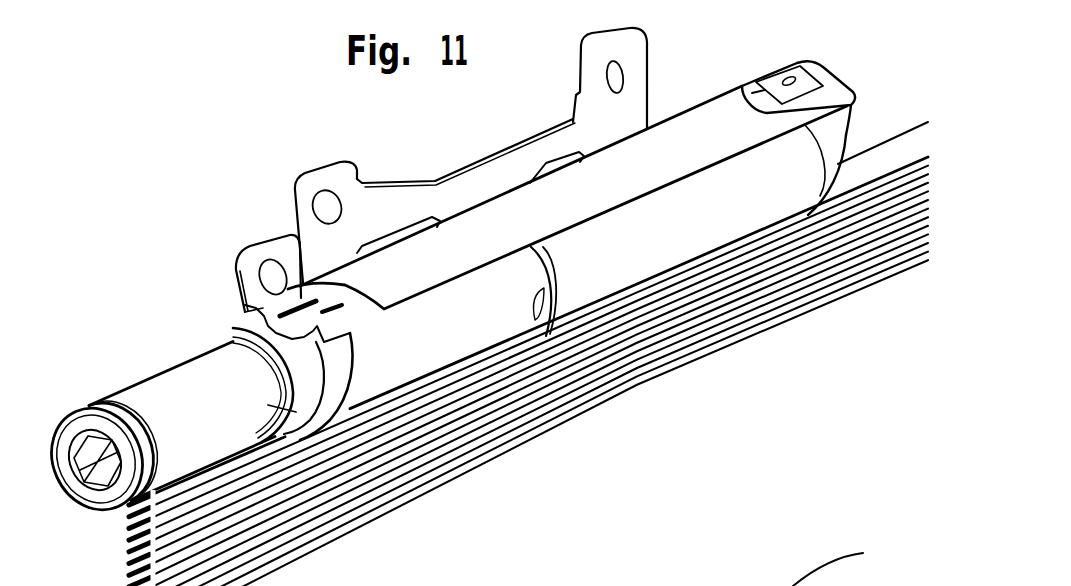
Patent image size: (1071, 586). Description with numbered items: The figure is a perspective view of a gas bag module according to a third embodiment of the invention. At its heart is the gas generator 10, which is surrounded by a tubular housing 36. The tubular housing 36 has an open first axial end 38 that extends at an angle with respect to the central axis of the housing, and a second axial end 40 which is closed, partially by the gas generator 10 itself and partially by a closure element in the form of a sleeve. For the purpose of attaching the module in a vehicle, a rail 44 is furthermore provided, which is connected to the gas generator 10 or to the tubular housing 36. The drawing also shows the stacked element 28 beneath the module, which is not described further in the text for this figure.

The gas generator 10 is at (146, 362).
The lamella stack 28 is at (805, 270).
The tubular housing 36 is at (655, 260).
The first axial end 38 is at (857, 118).
The second axial end 40 is at (547, 336).
The rail 44 is at (638, 98).